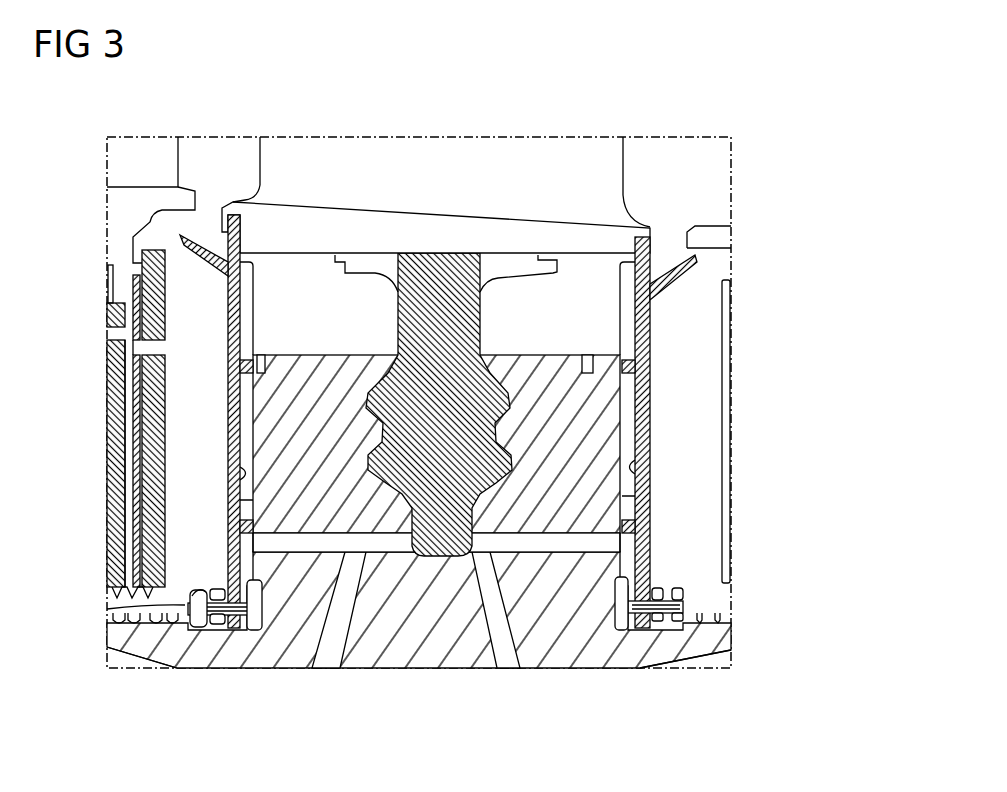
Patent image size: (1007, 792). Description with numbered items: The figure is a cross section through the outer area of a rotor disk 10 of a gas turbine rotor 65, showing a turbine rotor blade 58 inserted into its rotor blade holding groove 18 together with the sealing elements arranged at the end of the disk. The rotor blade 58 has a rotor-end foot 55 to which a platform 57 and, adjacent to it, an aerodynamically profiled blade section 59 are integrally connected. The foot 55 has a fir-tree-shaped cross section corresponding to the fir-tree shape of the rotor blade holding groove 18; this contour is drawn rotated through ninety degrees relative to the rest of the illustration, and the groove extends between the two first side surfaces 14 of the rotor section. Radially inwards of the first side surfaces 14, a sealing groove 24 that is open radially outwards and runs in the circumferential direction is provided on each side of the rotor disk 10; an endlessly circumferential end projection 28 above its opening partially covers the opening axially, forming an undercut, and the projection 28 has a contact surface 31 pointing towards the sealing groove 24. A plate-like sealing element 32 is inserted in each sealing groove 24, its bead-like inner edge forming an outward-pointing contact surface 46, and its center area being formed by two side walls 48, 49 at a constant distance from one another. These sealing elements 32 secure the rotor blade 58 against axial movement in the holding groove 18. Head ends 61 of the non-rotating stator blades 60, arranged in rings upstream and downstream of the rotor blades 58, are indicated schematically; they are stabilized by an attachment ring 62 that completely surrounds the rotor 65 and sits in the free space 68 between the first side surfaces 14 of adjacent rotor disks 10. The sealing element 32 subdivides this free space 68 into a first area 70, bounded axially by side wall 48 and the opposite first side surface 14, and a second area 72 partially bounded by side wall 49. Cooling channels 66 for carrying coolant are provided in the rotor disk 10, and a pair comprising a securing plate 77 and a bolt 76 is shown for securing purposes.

The rotor disk 10 is at (414, 650).
The first side surfaces 14 is at (250, 298).
The rotor blade holding groove 18 is at (472, 498).
The sealing groove 24 is at (250, 630).
The end projection 28 is at (234, 568).
The contact surface 31 is at (237, 627).
The sealing element 32 is at (230, 384).
The contact surface 46 is at (630, 586).
The side wall 48 is at (240, 470).
The side wall 49 is at (230, 503).
The foot 55 is at (452, 418).
The platform 57 is at (347, 220).
The rotor blade 58 is at (627, 178).
The blade section 59 is at (503, 173).
The stator blades 60 is at (135, 157).
The head ends 61 is at (128, 208).
The attachment ring 62 is at (143, 472).
The rotor 65 is at (419, 657).
The cooling channels 66 is at (329, 650).
The free space 68 is at (199, 418).
The first area 70 is at (247, 331).
The second area 72 is at (199, 453).
The bolt 76 is at (190, 606).
The securing plate 77 is at (190, 592).